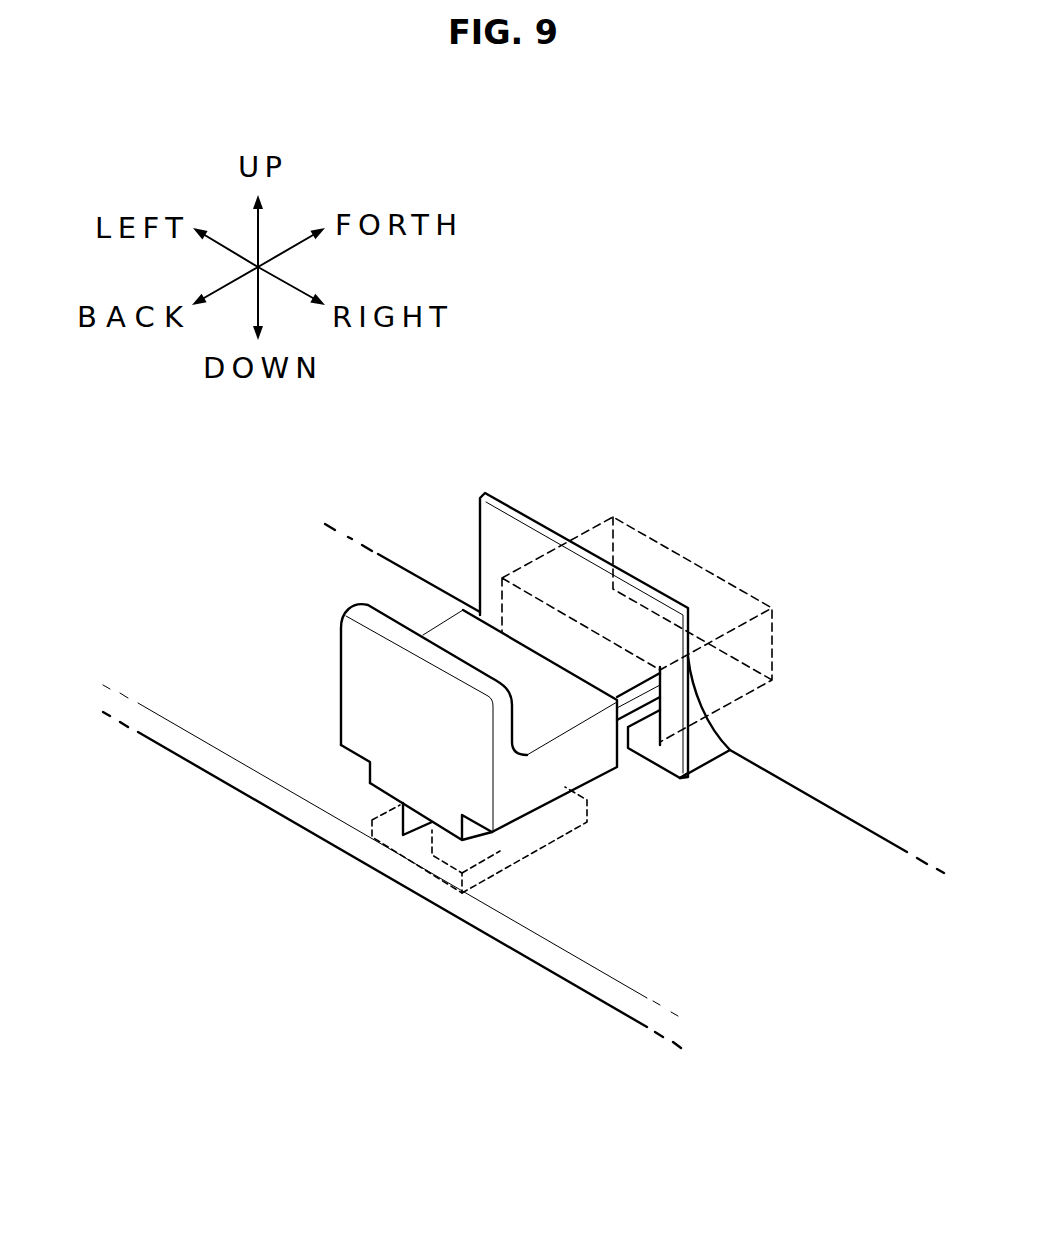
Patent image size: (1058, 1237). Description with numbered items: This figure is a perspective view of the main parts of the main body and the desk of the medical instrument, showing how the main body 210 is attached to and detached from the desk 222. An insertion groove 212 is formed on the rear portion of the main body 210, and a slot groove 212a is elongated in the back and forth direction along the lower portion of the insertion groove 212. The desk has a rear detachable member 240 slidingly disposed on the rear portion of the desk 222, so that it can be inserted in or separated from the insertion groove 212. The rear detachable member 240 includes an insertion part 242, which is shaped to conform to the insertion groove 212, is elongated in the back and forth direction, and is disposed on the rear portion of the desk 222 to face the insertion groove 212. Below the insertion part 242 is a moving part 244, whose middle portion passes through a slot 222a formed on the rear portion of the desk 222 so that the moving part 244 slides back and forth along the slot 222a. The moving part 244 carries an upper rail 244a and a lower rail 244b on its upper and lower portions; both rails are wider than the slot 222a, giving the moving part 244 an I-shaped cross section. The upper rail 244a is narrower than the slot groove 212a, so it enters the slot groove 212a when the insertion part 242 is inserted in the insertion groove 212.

The main body 210 is at (832, 782).
The insertion groove 212 is at (708, 580).
The slot groove 212a is at (618, 748).
The desk 222 is at (193, 750).
The slot 222a is at (618, 686).
The rear detachable member 240 is at (330, 673).
The insertion part 242 is at (527, 806).
The moving part 244 is at (402, 826).
The upper rail 244a is at (373, 775).
The lower rail 244b is at (455, 876).